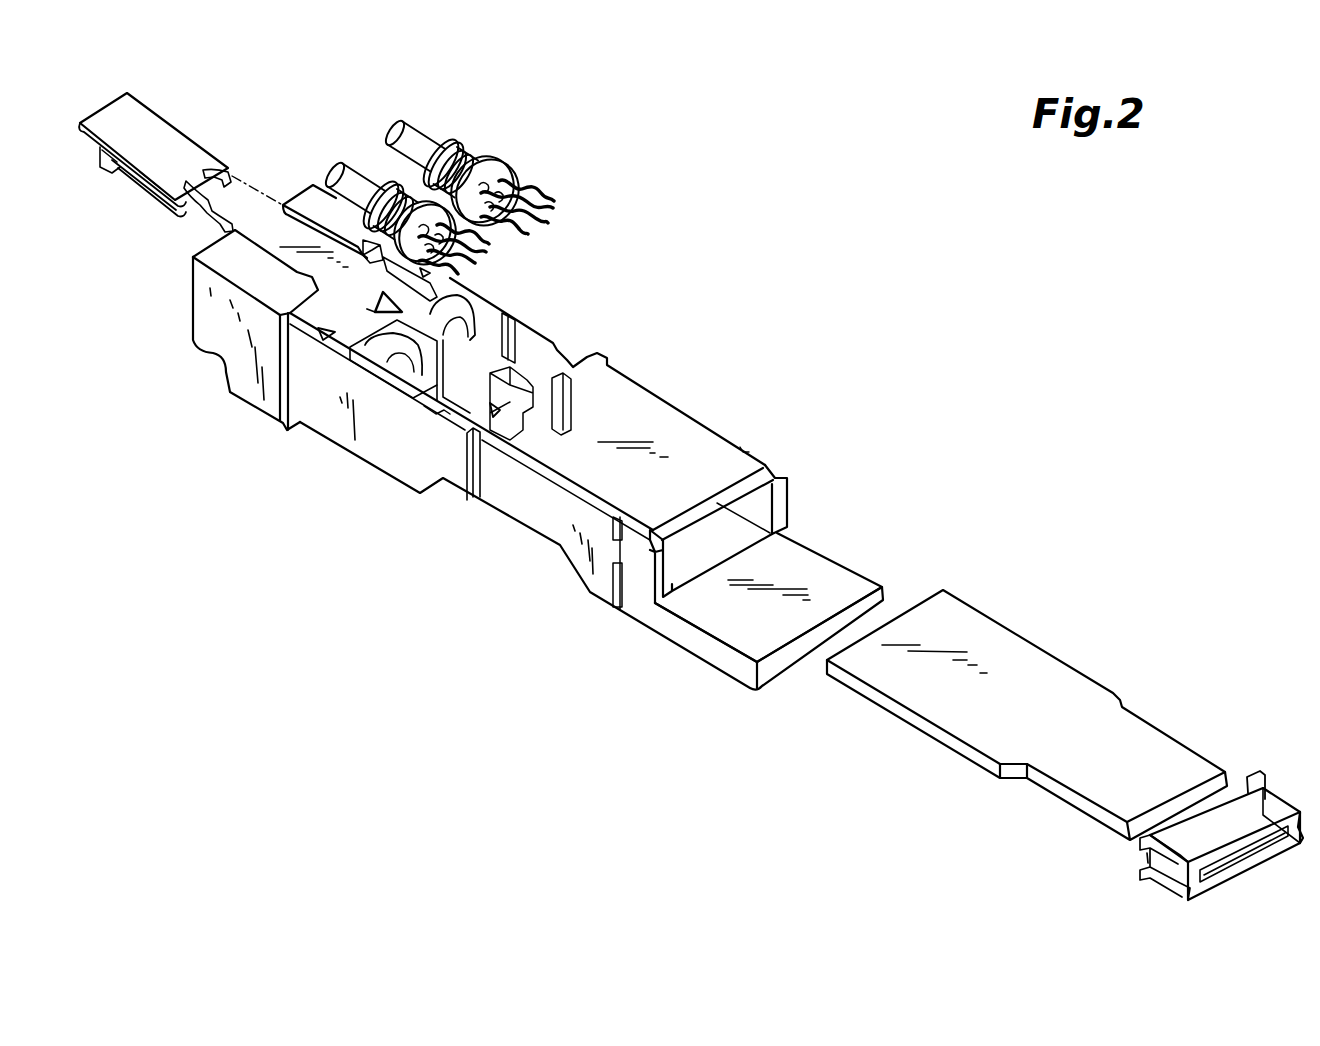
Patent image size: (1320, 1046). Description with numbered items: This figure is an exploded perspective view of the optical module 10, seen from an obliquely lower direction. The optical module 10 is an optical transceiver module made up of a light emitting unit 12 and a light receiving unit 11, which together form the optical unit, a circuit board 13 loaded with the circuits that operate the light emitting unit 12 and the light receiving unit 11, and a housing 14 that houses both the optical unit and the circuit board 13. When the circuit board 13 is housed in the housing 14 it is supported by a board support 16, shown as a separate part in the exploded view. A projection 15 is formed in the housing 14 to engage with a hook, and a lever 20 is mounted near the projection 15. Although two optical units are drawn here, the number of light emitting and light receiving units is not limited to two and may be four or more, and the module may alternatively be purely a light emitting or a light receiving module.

The optical module 10 is at (850, 318).
The light receiving unit 11 is at (385, 133).
The light emitting unit 12 is at (325, 168).
The circuit board 13 is at (1058, 677).
The housing 14 is at (695, 426).
The projection 15 is at (385, 298).
The board support 16 is at (1275, 797).
The lever 20 is at (115, 202).